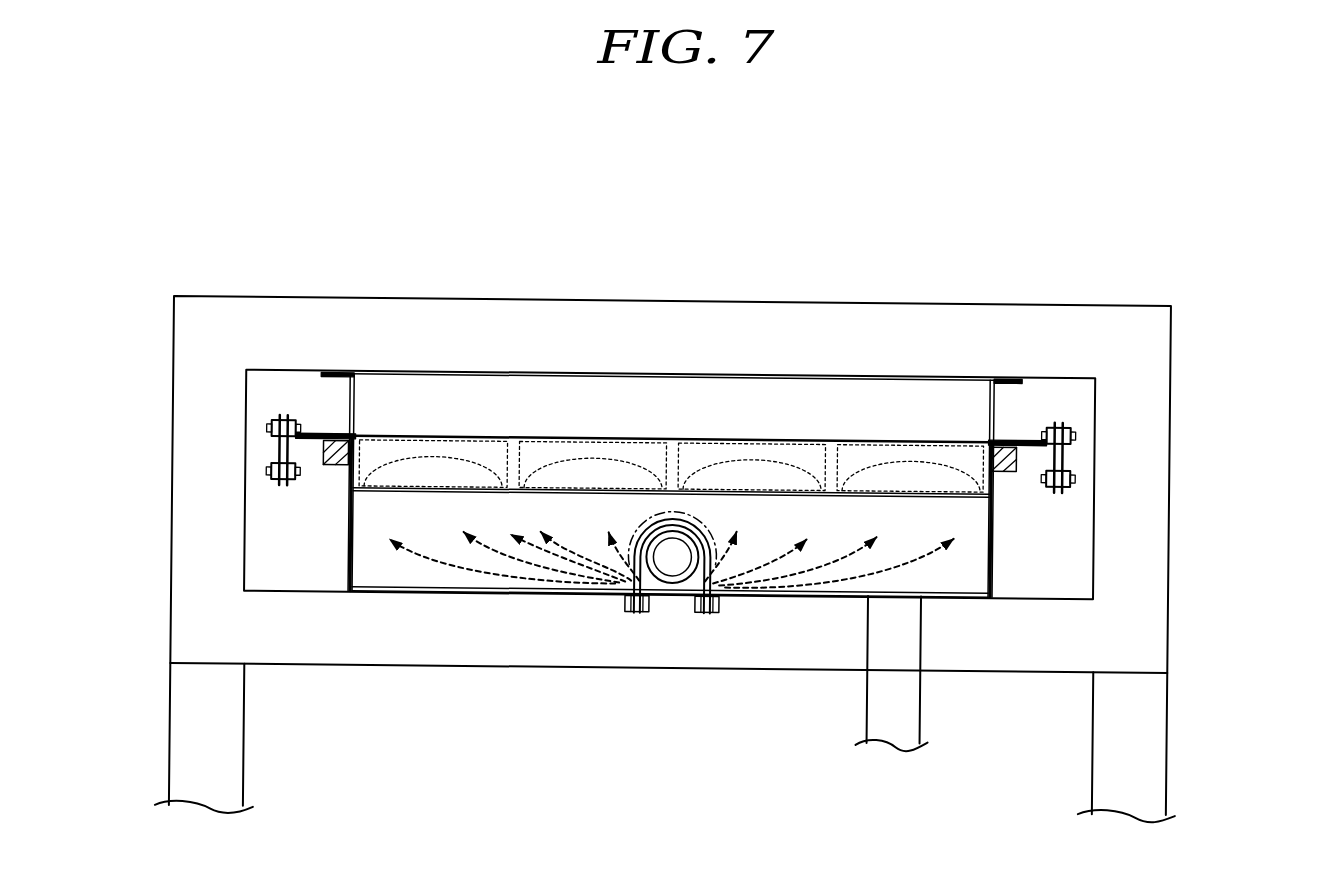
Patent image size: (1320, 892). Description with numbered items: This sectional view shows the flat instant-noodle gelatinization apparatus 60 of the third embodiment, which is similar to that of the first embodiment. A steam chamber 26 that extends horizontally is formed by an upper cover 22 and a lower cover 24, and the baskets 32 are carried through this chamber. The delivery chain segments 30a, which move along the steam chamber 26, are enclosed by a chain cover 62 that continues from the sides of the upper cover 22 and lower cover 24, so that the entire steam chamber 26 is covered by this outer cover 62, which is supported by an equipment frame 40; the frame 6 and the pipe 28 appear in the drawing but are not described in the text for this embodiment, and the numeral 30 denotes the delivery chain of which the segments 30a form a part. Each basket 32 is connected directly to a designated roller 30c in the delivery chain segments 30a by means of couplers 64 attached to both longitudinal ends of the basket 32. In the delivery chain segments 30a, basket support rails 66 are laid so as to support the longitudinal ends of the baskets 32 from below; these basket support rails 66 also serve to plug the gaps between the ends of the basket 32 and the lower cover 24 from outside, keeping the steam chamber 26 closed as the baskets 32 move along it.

The frame 6 is at (901, 296).
The upper cover 22 is at (806, 369).
The lower cover 24 is at (772, 590).
The steam chamber 26 is at (506, 562).
The pipe 28 is at (671, 612).
The fastening bolt assembly 30 is at (676, 405).
The delivery chain segments 30a is at (262, 443).
The roller 30c is at (284, 414).
The basket 32 is at (596, 434).
The equipment frame 40 is at (190, 709).
The gelatinization apparatus 60 is at (703, 292).
The chain cover 62 is at (299, 369).
The coupler 64 is at (340, 439).
The basket support rail 66 is at (330, 463).